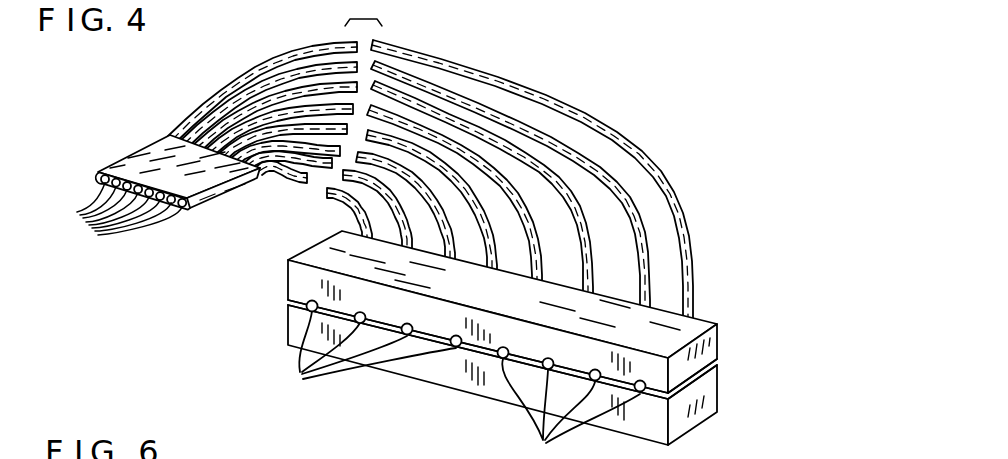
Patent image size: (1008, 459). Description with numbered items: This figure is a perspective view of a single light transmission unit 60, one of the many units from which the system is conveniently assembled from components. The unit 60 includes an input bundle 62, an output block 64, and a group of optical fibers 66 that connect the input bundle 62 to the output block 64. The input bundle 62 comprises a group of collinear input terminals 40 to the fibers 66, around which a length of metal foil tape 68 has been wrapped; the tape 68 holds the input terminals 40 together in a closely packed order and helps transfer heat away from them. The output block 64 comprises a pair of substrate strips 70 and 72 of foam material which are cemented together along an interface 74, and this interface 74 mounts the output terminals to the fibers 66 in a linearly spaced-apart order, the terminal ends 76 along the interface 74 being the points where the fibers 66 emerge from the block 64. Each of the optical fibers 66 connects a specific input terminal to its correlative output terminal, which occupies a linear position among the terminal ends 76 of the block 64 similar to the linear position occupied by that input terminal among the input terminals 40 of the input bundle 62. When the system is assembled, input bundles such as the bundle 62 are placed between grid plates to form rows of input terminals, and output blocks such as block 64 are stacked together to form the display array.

The input terminals 40 is at (119, 209).
The light transmission unit 60 is at (238, 59).
The input bundle 62 is at (127, 151).
The output block 64 is at (520, 345).
The optical fibers 66 is at (560, 88).
The metal foil tape 68 is at (230, 187).
The substrate strip 70 is at (708, 400).
The substrate strip 72 is at (712, 351).
The interface 74 is at (717, 365).
The contact leads 76 is at (463, 440).